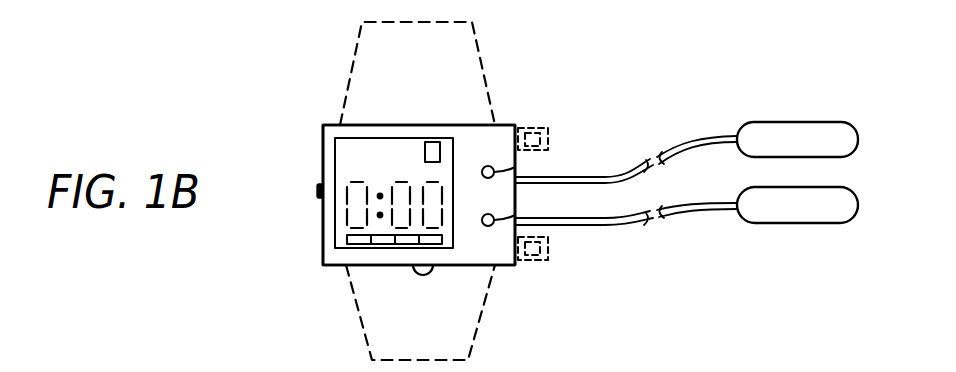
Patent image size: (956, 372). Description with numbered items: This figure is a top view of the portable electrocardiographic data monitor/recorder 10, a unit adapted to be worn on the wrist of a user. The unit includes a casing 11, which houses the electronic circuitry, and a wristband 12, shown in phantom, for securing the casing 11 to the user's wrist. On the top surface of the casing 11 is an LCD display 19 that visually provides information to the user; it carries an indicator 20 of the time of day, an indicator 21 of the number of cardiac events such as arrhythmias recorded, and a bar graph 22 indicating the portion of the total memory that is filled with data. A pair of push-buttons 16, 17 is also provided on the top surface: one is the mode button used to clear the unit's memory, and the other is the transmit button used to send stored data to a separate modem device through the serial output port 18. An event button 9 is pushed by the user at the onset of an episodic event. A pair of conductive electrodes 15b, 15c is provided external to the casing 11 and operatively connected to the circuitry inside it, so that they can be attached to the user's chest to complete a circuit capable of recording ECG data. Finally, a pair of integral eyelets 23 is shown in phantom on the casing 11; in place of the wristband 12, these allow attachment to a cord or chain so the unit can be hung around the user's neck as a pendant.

The portable electrocardiographic (ECG) data monitor/recorder 10 is at (313, 92).
The event button 9 is at (423, 276).
The casing 11 is at (498, 267).
The wristband 12 is at (475, 332).
The conductive electrode 15b is at (815, 122).
The conductive electrode 15c is at (812, 223).
The push-button 16 is at (517, 170).
The push-button 17 is at (517, 212).
The serial output port 18 is at (318, 197).
The LCD display 19 is at (322, 228).
The indicator of the time of day 20 is at (342, 181).
The indicator of the number of cardiac events 21 is at (442, 144).
The bar graph 22 is at (341, 246).
The integral eyelets 23 is at (548, 128).